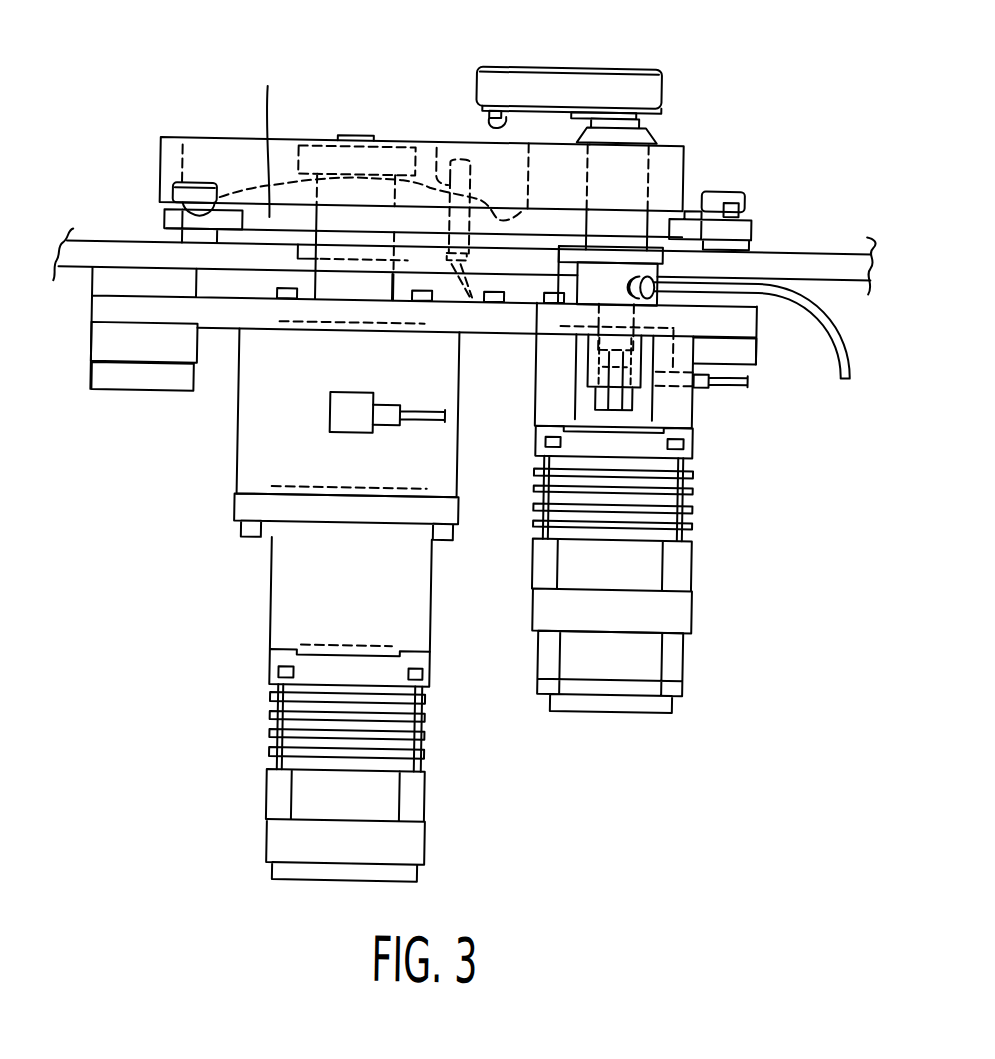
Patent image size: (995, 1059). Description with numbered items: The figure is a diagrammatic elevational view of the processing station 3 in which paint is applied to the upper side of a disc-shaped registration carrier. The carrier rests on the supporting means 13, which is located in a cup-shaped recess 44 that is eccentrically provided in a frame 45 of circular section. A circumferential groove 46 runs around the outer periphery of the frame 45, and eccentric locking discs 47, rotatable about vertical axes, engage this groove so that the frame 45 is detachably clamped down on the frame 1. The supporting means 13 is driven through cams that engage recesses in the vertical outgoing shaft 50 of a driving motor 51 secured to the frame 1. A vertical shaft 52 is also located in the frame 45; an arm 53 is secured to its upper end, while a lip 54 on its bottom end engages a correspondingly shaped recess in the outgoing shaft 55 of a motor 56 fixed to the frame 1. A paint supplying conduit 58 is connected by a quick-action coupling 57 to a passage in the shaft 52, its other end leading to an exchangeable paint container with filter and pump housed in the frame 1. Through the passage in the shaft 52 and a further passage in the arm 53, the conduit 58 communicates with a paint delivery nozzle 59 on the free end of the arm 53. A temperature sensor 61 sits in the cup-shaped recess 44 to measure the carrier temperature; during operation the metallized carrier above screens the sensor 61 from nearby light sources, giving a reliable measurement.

The frame 1 is at (81, 264).
The station 3 is at (140, 148).
The supporting means 13 is at (377, 162).
The cup-shaped recess 44 is at (204, 158).
The frame 45 is at (670, 159).
The circumferential groove 46 is at (266, 137).
The eccentric locking discs 47 is at (181, 227).
The outgoing shaft 50 is at (345, 303).
The driving motor 51 is at (298, 589).
The vertical shaft 52 is at (660, 150).
The arm 53 is at (589, 86).
The lip 54 is at (599, 352).
The outgoing shaft 55 is at (599, 360).
The motor 56 is at (679, 567).
The quick-action coupling 57 is at (627, 286).
The paint supplying conduit 58 is at (834, 332).
The paint delivery nozzle 59 is at (513, 122).
The temperature sensor 61 is at (434, 149).